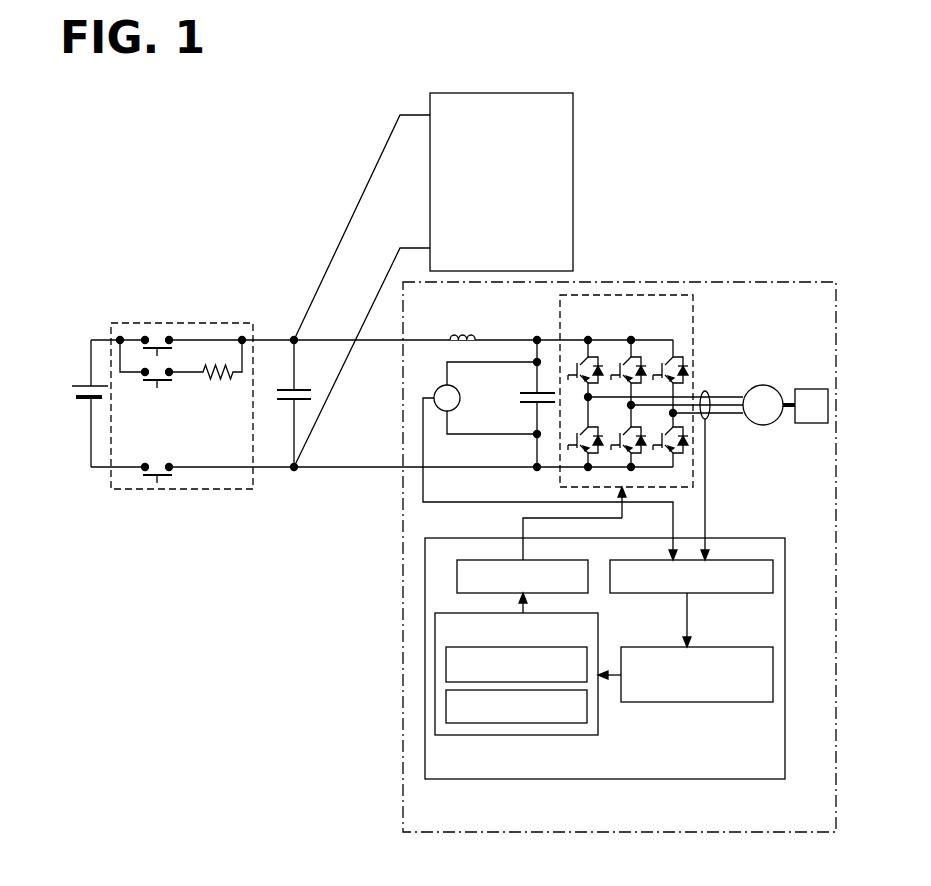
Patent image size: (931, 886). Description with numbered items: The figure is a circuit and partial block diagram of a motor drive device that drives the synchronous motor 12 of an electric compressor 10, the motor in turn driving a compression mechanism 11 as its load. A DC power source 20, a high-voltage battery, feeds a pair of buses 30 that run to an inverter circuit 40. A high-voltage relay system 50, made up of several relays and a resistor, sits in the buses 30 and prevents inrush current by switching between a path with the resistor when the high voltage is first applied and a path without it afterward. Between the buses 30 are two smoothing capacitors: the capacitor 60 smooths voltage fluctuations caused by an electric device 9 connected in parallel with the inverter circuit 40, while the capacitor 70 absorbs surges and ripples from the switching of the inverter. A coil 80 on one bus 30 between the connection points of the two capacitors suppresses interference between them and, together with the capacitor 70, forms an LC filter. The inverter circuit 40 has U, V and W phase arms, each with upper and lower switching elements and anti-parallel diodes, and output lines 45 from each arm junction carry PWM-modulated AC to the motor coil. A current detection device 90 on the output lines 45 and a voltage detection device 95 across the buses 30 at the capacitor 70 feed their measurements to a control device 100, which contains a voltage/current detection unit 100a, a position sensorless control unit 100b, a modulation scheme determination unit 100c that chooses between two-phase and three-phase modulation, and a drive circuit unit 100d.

The electric device 9 is at (526, 93).
The electric compressor 10 is at (712, 280).
The compression mechanism 11 is at (810, 389).
The synchronous motor 12 is at (759, 385).
The DC power source 20 is at (81, 385).
The buses 30 is at (381, 341).
The inverter circuit 40 is at (665, 295).
The output lines 45 is at (719, 407).
The high-voltage relay system 50 is at (230, 322).
The capacitor 60 is at (289, 388).
The capacitor 70 is at (526, 379).
The coil 80 is at (466, 334).
The current detection device 90 is at (704, 392).
The voltage detection device 95 is at (443, 387).
The control device 100 is at (593, 780).
The voltage/current detection unit 100a is at (743, 560).
The position sensorless control unit 100b is at (737, 702).
The modulation scheme determination unit 100c is at (435, 675).
The drive circuit unit 100d is at (457, 578).